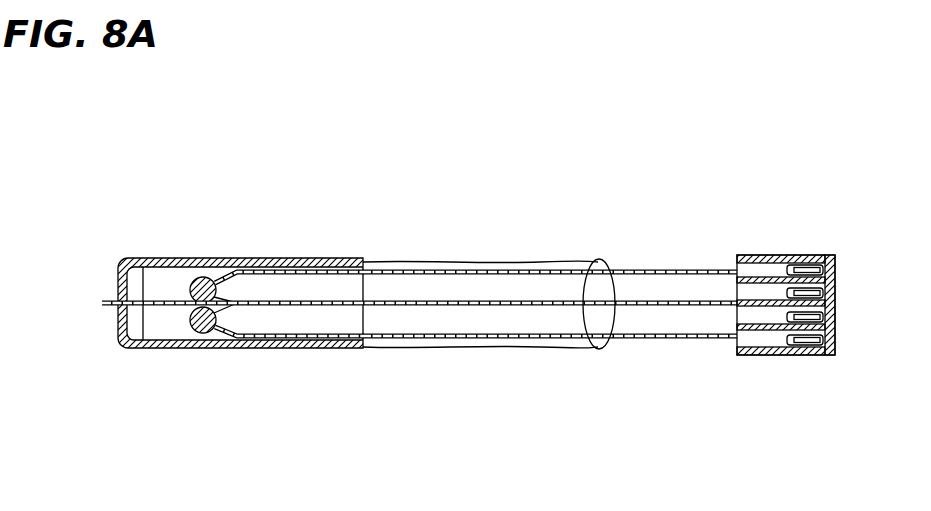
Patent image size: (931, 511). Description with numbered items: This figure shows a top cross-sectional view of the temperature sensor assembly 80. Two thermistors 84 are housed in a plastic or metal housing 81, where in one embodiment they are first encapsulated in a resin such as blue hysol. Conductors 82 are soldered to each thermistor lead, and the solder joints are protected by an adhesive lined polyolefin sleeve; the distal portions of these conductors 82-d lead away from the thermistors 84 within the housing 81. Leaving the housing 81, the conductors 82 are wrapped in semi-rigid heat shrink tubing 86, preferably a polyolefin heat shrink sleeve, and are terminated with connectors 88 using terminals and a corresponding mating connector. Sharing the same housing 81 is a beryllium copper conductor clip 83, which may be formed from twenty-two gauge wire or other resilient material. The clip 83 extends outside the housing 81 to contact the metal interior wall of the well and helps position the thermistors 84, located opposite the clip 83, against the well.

The temperature sensor assembly 80 is at (440, 292).
The housing 81 is at (235, 262).
The conductors 82 is at (547, 334).
The distal ends of conductor wires 82-d is at (340, 334).
The conductor clip 83 is at (163, 302).
The thermistors 84 is at (181, 265).
The heat shrink tubing 86 is at (570, 350).
The connectors 88 is at (775, 357).